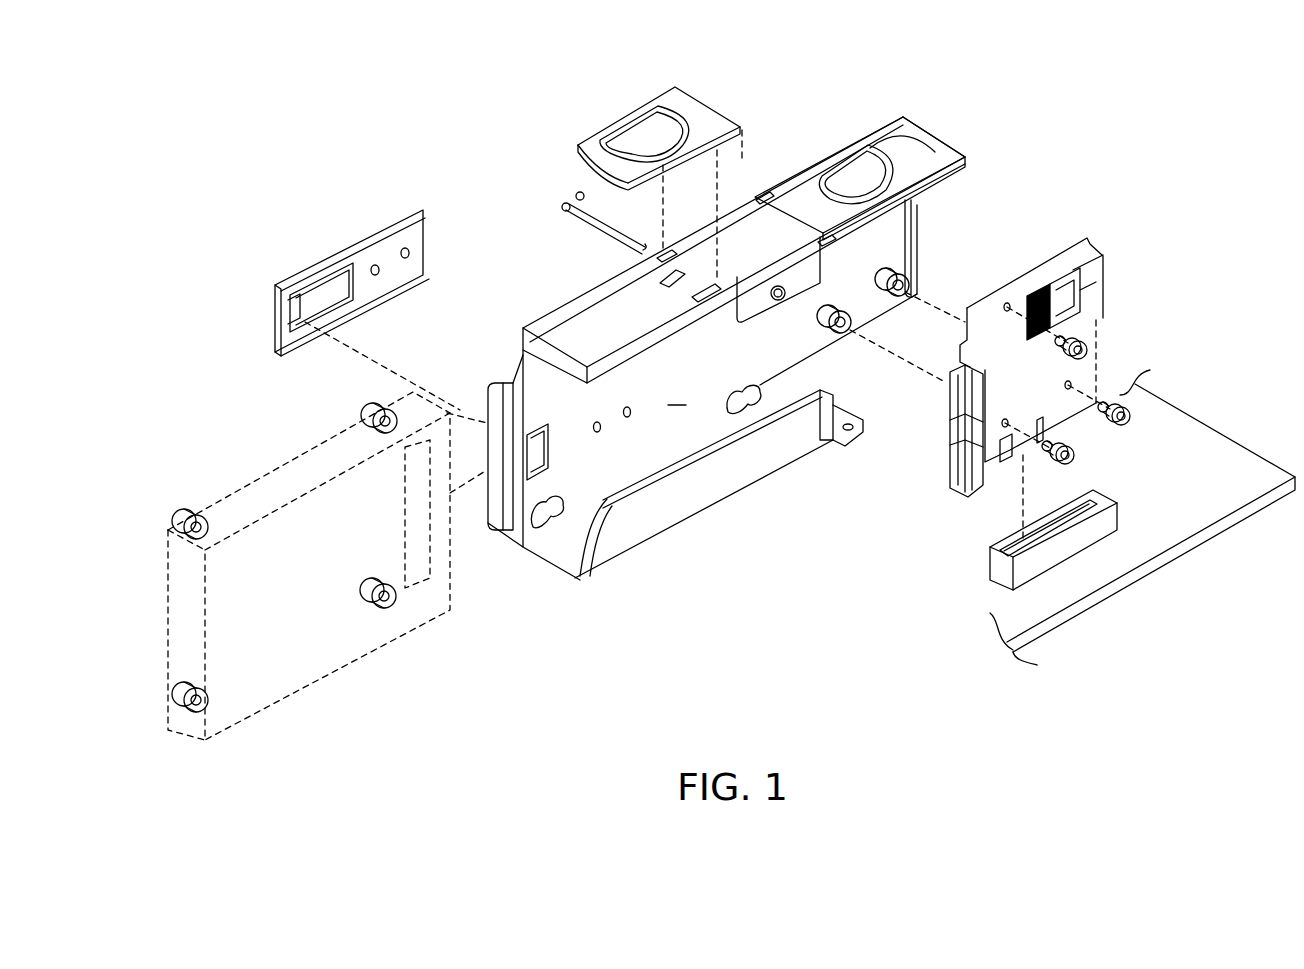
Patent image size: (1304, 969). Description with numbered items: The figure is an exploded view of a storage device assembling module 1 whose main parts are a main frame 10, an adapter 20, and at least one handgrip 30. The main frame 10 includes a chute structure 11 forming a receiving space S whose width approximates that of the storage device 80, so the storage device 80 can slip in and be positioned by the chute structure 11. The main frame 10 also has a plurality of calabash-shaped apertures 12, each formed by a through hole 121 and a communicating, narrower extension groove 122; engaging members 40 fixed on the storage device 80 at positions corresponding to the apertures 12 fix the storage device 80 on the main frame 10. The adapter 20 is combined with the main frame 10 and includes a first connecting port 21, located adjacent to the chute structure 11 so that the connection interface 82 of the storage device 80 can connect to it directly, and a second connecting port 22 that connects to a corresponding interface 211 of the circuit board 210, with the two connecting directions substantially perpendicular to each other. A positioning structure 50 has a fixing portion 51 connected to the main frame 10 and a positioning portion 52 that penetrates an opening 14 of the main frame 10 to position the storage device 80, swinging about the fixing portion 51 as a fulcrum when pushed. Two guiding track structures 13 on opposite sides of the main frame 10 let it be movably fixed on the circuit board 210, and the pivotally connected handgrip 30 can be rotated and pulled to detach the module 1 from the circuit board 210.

The storage device assembling module 1 is at (1137, 135).
The main frame 10 is at (920, 153).
The chute structure 11 is at (737, 470).
The aperture 12 is at (748, 402).
The through hole 121 is at (537, 517).
The extension groove 122 is at (557, 520).
The guiding track structure 13 is at (505, 382).
The opening 14 is at (503, 522).
The adapter 20 is at (1047, 258).
The first connecting port 21 is at (948, 450).
The second connecting port 22 is at (1073, 407).
The circuit board 210 is at (1147, 562).
The corresponding interface 211 is at (997, 567).
The handgrip 30 is at (652, 117).
The engaging member 40 is at (360, 417).
The positioning structure 50 is at (365, 162).
The fixing portion 51 is at (385, 255).
The positioning portion 52 is at (298, 300).
The storage device 80 is at (325, 650).
The connection interface 82 is at (420, 575).